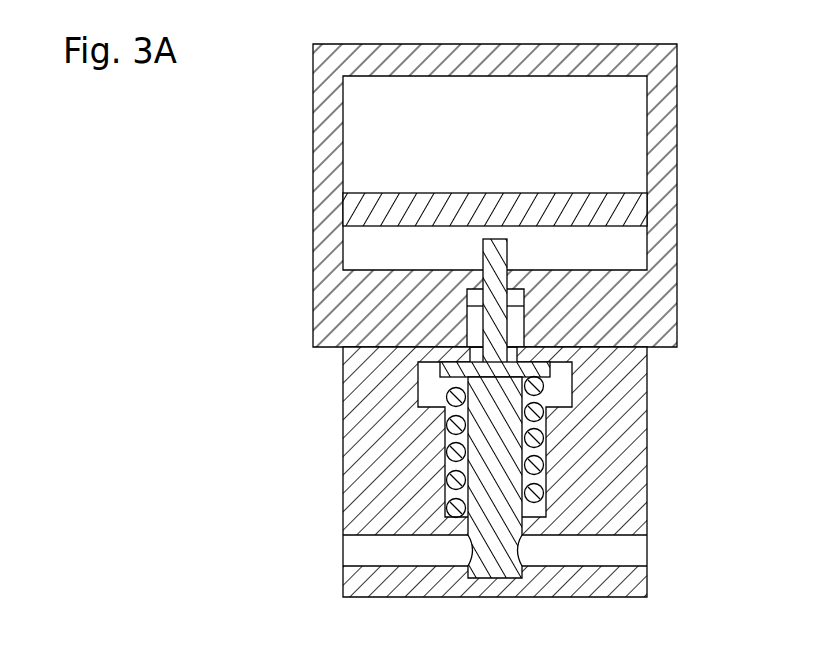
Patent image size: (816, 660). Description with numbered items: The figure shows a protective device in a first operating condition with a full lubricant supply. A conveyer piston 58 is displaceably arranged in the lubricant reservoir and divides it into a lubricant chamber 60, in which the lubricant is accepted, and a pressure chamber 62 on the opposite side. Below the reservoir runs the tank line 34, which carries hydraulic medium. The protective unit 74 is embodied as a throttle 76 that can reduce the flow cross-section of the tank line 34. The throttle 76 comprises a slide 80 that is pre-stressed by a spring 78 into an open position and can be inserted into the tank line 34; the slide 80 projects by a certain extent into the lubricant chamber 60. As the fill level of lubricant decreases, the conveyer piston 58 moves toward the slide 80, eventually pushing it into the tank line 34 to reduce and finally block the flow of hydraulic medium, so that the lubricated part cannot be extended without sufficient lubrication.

The tank line 34 is at (327, 208).
The conveyer piston 58 is at (520, 195).
The lubricant chamber 60 is at (612, 259).
The pressure chamber 62 is at (612, 129).
The protective unit 74 is at (424, 408).
The throttle 76 is at (424, 408).
The spring 78 is at (538, 440).
The slide 80 is at (513, 523).